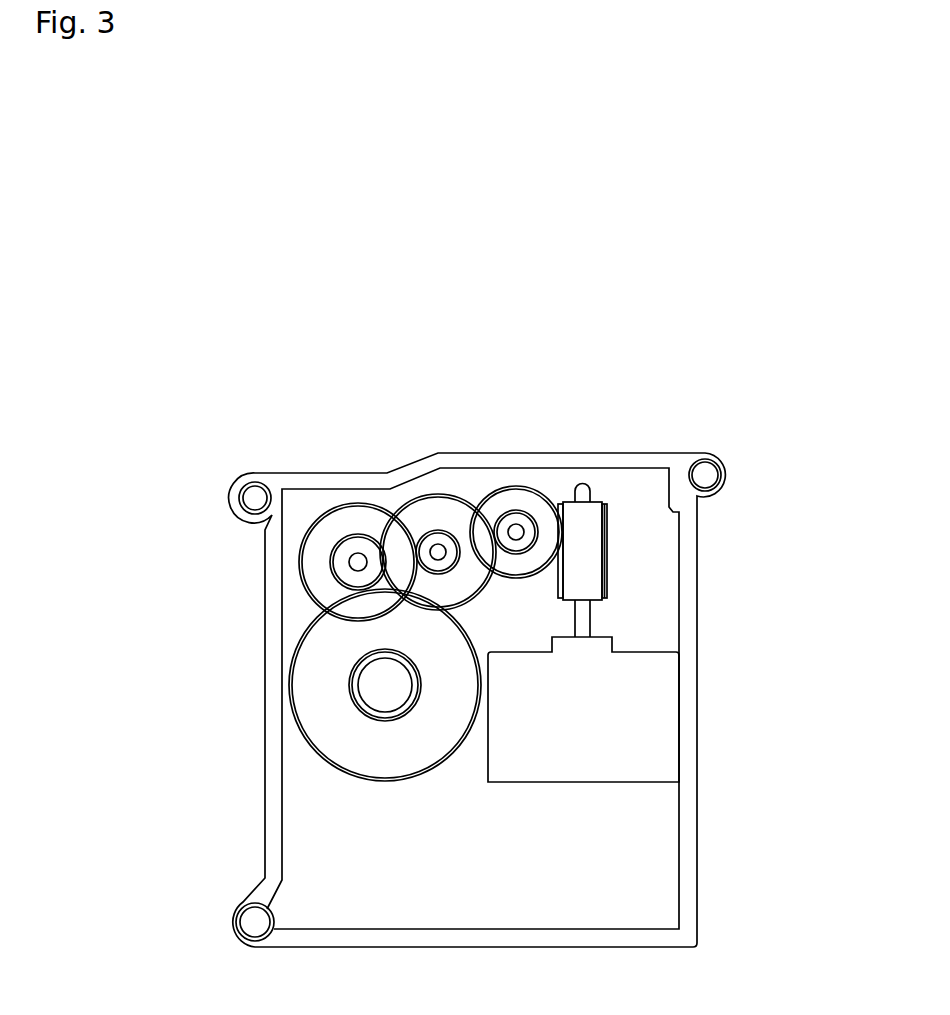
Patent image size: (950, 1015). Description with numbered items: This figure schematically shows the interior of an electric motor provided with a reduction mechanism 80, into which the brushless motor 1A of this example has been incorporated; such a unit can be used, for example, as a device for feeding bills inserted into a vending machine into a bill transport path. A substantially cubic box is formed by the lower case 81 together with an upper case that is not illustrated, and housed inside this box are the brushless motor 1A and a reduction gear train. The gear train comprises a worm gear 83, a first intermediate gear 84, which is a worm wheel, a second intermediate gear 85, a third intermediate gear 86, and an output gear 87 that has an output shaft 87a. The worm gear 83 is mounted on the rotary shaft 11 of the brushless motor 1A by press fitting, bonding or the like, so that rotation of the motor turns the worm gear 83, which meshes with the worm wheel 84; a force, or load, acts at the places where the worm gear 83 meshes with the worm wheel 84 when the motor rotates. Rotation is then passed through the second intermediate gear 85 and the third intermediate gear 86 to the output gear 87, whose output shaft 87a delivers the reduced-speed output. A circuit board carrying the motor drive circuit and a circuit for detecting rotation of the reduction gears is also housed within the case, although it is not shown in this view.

The electric motor provided with a reduction mechanism 80 is at (656, 430).
The lower case 81 is at (475, 458).
The worm gear 83 is at (590, 543).
The first intermediate gear (worm wheel) 84 is at (522, 495).
The second intermediate gear 85 is at (440, 507).
The third intermediate gear 86 is at (347, 515).
The output gear 87 is at (320, 659).
The output shaft 87a is at (372, 690).
The rotary shaft 11 is at (583, 620).
The brushless motor 1A is at (640, 687).